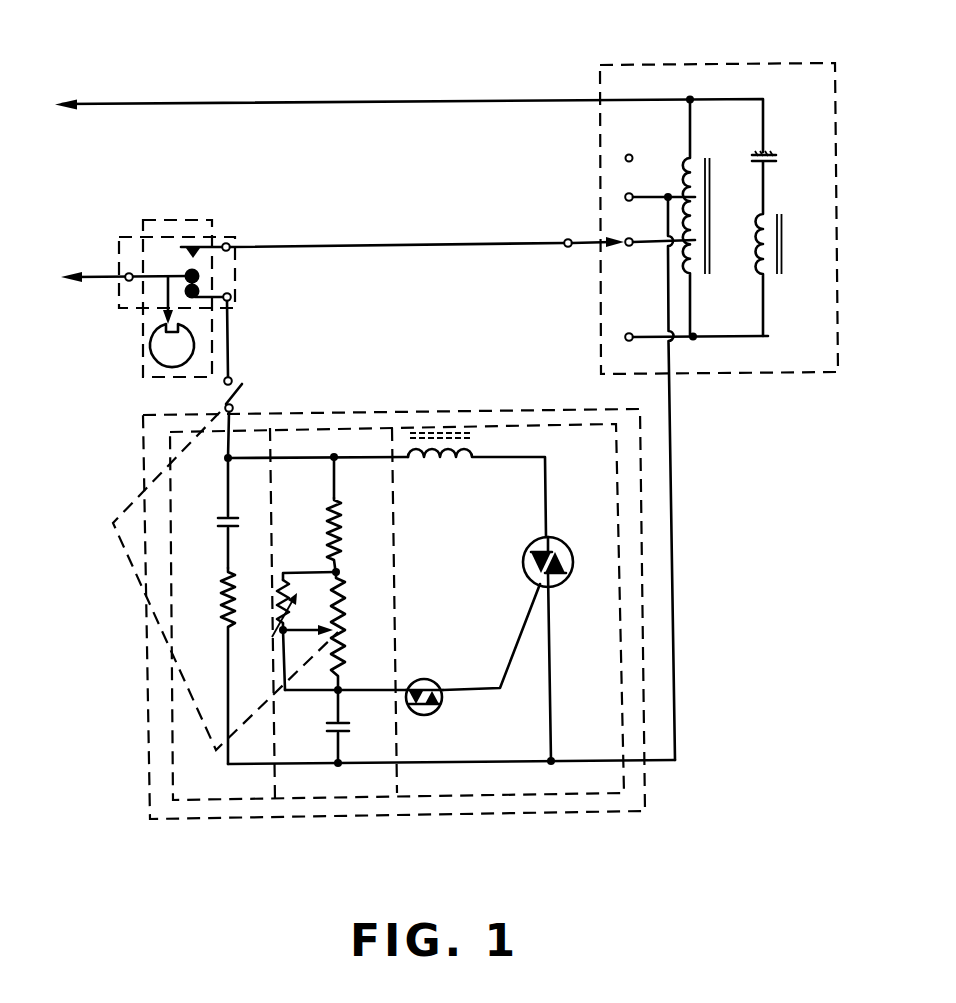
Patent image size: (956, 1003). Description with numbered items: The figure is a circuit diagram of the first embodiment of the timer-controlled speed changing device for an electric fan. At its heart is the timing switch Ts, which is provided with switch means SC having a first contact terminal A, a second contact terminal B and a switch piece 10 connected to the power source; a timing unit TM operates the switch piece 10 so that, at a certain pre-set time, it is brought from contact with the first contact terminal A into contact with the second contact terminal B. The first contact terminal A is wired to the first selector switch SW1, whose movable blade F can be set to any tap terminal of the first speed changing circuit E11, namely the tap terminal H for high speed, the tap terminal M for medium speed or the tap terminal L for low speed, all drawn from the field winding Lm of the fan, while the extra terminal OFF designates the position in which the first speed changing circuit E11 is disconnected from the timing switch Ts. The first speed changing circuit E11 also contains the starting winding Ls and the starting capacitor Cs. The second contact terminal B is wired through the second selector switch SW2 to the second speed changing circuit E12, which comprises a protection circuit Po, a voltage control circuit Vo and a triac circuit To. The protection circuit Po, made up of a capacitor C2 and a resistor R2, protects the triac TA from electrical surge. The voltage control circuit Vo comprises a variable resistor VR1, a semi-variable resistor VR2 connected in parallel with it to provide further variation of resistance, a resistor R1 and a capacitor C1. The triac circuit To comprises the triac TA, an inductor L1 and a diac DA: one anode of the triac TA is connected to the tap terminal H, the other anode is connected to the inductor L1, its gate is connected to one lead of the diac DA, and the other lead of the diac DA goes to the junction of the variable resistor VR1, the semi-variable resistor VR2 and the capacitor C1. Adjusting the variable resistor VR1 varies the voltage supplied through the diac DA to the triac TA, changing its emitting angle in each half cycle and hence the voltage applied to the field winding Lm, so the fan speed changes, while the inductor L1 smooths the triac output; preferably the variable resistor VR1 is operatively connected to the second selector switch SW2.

The first speed changing circuit E11 is at (720, 66).
The extra terminal OFF is at (659, 159).
The tap terminal for high speed H is at (660, 212).
The tap terminal for medium speed M is at (660, 255).
The tap terminal for low speed L is at (696, 323).
The field winding Lm is at (720, 218).
The starting winding Ls is at (788, 249).
The starting capacitor Cs is at (783, 159).
The timing switch Ts is at (177, 272).
The switch piece 10 is at (152, 274).
The first contact terminal A is at (200, 244).
The second contact terminal B is at (210, 290).
The switch means SC is at (224, 272).
The timing unit TM is at (195, 345).
The second selector switch SW2 is at (266, 393).
The first selector switch SW1 is at (584, 228).
The movable blade F of switch SW1 F is at (566, 268).
The second speed changing circuit E12 is at (445, 820).
The protection circuit Po is at (200, 804).
The voltage control circuit Vo is at (315, 804).
The triac circuit To is at (546, 800).
The capacitor C2 is at (213, 515).
The resistor R2 is at (209, 666).
The resistor R1 is at (353, 516).
The semi-variable resistor VR2 is at (284, 631).
The variable resistor VR1 is at (344, 634).
The capacitor C1 is at (358, 727).
The inductor L1 is at (477, 485).
The triac TA is at (516, 638).
The diac DA is at (425, 713).